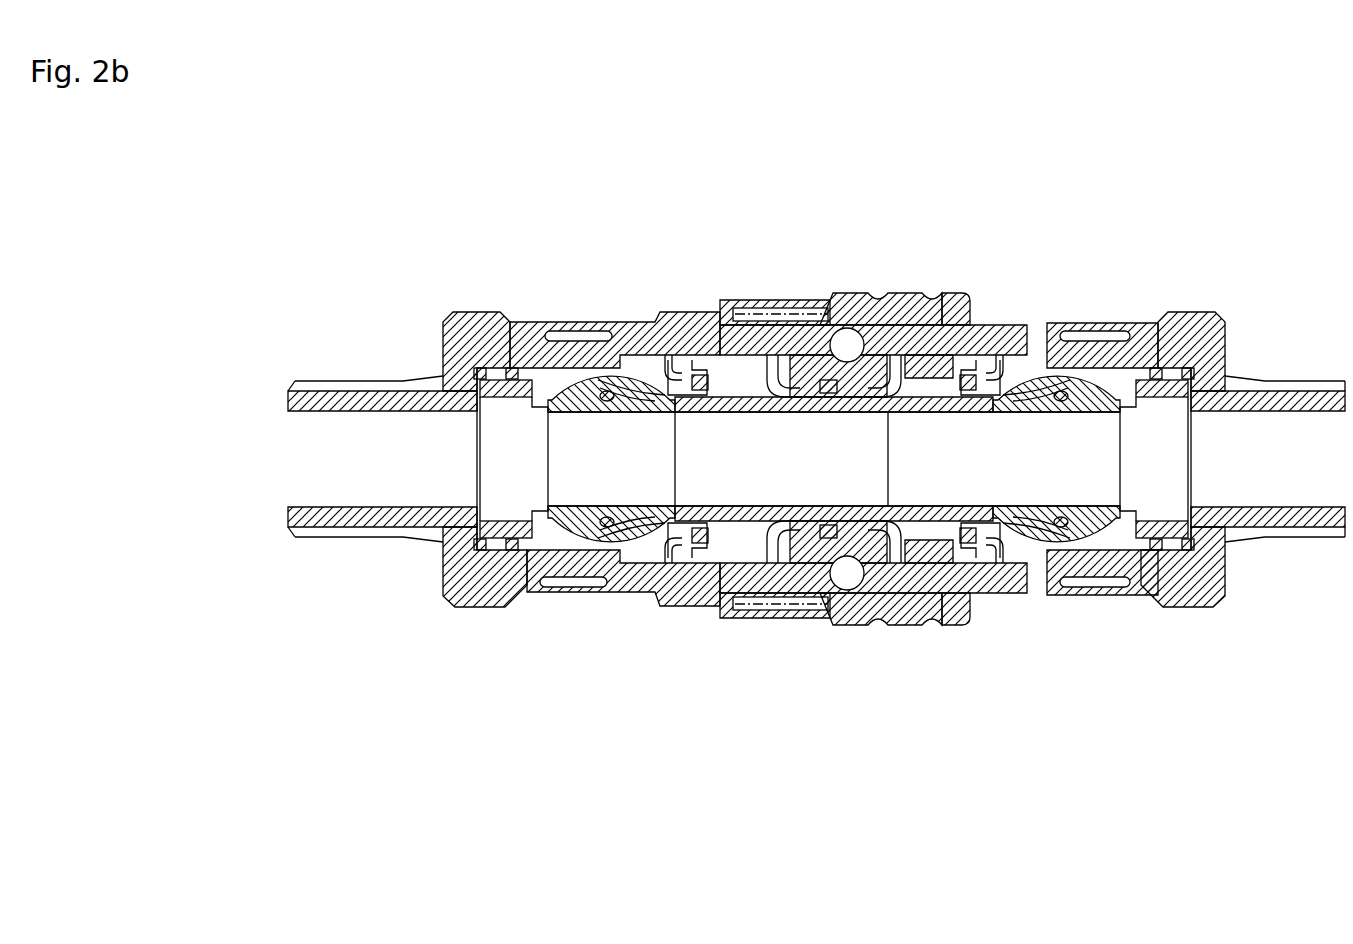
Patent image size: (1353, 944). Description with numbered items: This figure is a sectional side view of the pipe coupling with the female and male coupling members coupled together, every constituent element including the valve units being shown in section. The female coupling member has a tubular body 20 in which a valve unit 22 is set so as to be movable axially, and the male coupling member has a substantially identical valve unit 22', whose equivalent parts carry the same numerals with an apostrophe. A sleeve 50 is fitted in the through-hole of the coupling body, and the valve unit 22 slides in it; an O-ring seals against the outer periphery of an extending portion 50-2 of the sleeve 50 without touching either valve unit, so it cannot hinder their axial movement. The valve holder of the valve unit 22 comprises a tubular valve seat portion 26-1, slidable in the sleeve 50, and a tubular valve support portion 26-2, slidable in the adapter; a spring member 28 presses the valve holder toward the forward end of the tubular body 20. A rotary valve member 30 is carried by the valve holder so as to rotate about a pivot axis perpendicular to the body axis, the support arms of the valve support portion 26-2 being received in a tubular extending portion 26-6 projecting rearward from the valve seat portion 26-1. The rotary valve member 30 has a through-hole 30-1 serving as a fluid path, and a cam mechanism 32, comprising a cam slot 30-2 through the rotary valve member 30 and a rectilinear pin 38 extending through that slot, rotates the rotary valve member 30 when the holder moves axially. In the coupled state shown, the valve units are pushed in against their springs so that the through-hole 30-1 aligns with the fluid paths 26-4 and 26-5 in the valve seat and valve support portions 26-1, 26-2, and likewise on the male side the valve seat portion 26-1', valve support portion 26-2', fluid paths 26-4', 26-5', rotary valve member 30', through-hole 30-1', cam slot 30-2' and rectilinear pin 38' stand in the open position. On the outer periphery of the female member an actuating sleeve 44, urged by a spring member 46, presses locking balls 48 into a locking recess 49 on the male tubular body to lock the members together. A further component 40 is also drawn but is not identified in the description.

The tubular body 20 is at (577, 310).
The valve unit 22 is at (698, 390).
The valve unit 22' is at (1059, 408).
The tubular valve seat portion 26-1 is at (735, 508).
The tubular valve seat portion 26-1' is at (932, 407).
The tubular valve support portion 26-2 is at (511, 540).
The tubular valve support portion 26-2' is at (1172, 423).
The fluid path 26-4 is at (873, 398).
The fluid path 26-4' is at (956, 499).
The fluid path 26-5 is at (418, 420).
The fluid path 26-5' is at (1232, 515).
The tubular extending portion 26-6 is at (665, 335).
The spring member 28 is at (452, 311).
The rotary valve member 30 is at (611, 566).
The rotary valve member 30' is at (1061, 510).
The through-hole 30-1 is at (567, 536).
The through-hole 30-1' is at (1092, 549).
The cam slot 30-2 is at (634, 459).
The cam slot 30-2' is at (1032, 394).
The cam mechanism 32 is at (633, 376).
The rectilinear pin 38 is at (573, 426).
The rectilinear pin 38' is at (1095, 429).
The valve cup 40 is at (699, 370).
The actuating sleeve 44 is at (838, 296).
The spring member 46 is at (741, 330).
The locking balls 48 is at (848, 343).
The locking recess 49 is at (845, 591).
The sleeve 50 is at (717, 553).
The extending portion 50-2 is at (937, 562).